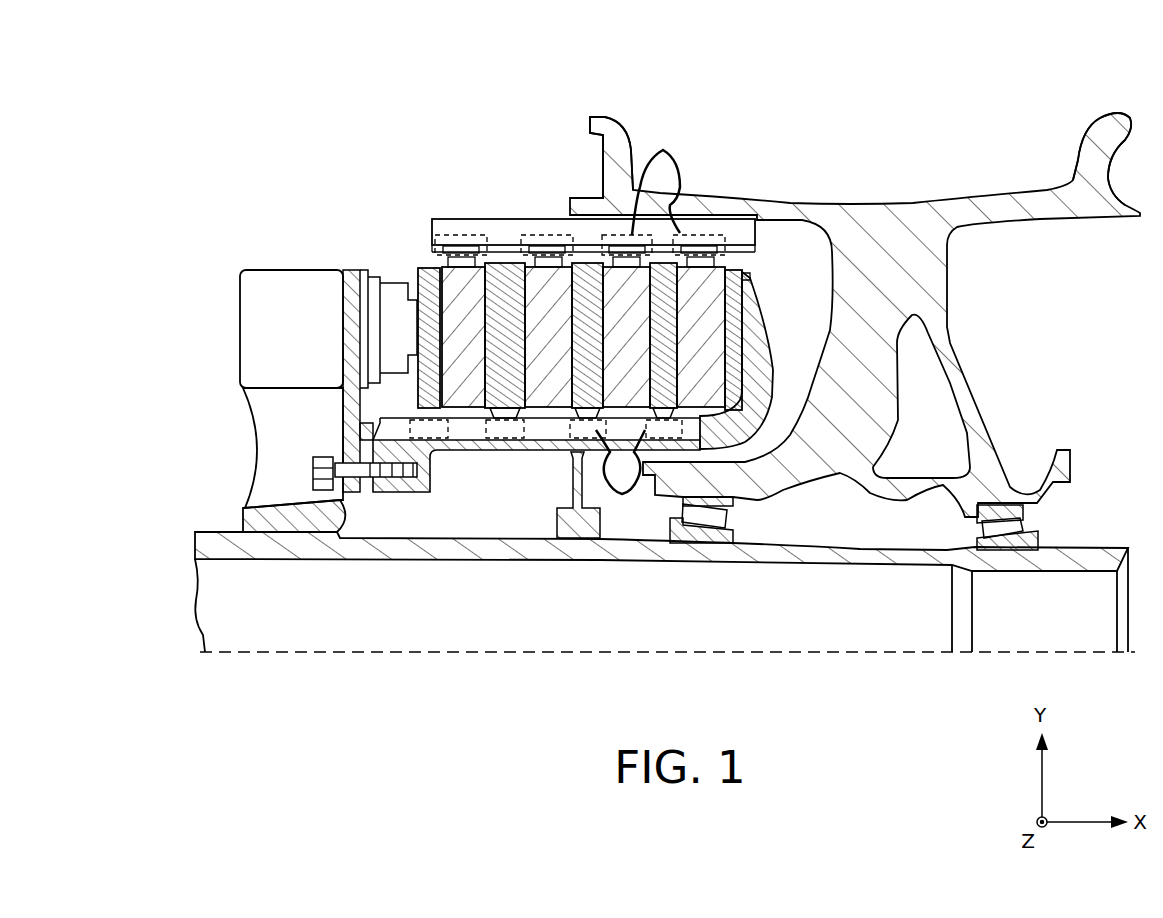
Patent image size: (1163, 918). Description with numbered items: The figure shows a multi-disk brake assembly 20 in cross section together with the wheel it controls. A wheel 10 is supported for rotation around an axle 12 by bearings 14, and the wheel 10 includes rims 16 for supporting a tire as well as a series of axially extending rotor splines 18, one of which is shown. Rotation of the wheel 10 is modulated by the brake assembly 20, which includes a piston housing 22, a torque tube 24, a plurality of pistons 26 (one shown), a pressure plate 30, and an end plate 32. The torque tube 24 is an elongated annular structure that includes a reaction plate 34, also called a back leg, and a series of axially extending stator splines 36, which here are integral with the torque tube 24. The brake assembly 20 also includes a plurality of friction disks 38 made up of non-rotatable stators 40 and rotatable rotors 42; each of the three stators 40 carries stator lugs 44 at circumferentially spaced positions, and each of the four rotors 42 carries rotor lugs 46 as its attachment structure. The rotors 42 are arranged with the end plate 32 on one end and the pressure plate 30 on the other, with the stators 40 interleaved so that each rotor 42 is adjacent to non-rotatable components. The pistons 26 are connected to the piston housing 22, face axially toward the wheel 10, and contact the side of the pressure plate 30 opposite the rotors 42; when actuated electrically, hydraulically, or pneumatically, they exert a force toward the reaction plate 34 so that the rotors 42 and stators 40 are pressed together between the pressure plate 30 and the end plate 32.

The wheel 10 is at (956, 178).
The axle 12 is at (866, 549).
The bearings 14 is at (713, 522).
The rims 16 is at (612, 120).
The rotor splines 18 is at (508, 226).
The multi-disk brake assembly 20 is at (323, 102).
The piston housing 22 is at (352, 440).
The torque tube 24 is at (477, 452).
The pistons 26 is at (390, 278).
The pressure plate 30 is at (418, 278).
The end plate 32 is at (742, 272).
The reaction plate 34 is at (765, 348).
The stator splines 36 is at (548, 418).
The friction disks 38 is at (421, 241).
The stator 40 is at (505, 402).
The rotor 42 is at (462, 276).
The stator lugs 44 is at (620, 473).
The rotor lugs 46 is at (656, 179).